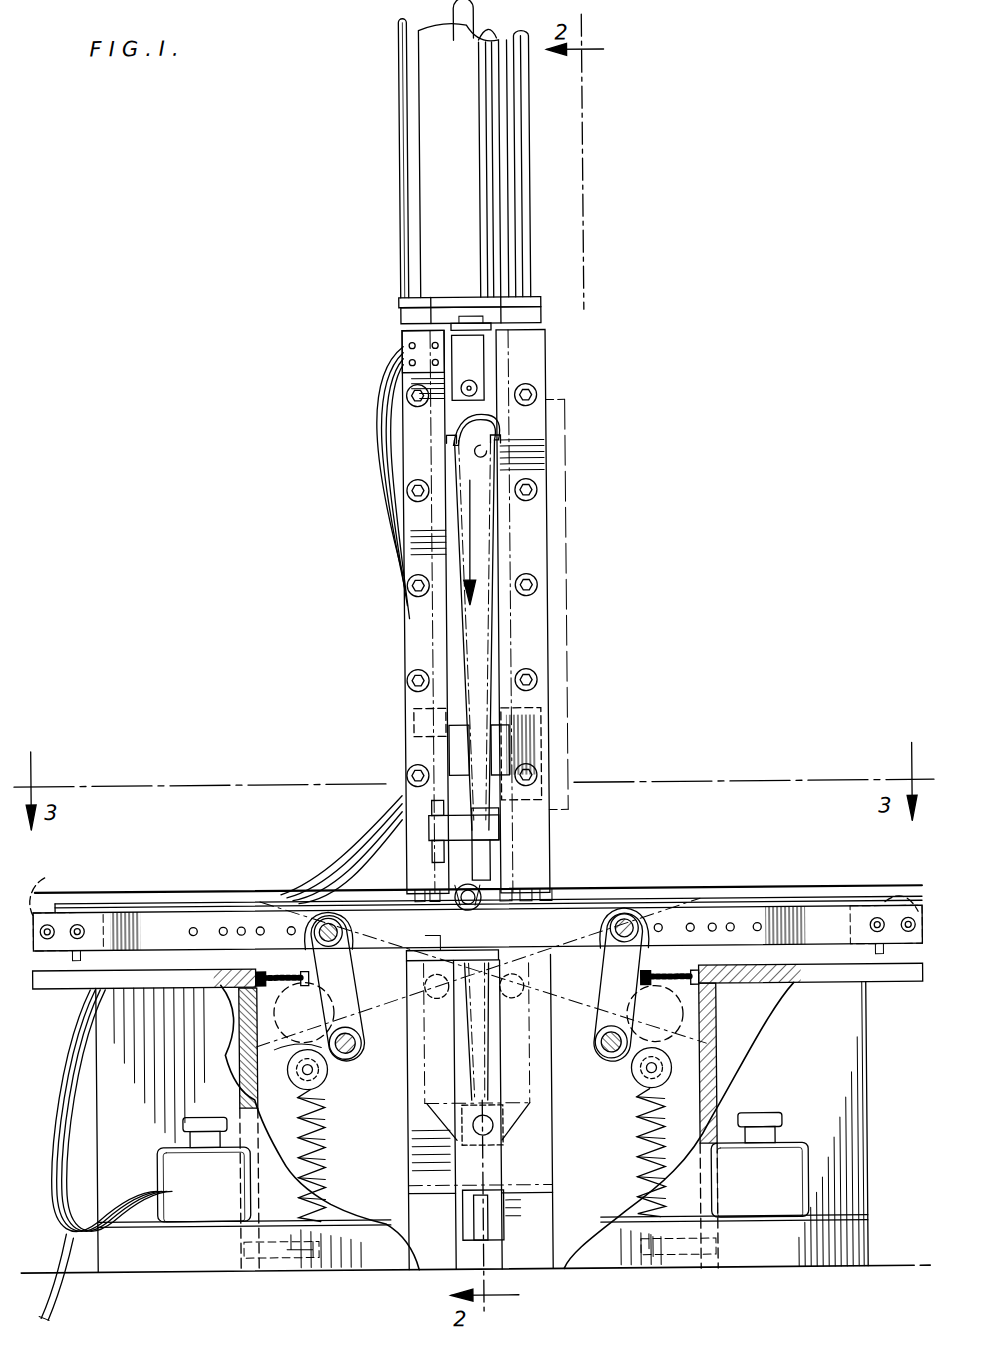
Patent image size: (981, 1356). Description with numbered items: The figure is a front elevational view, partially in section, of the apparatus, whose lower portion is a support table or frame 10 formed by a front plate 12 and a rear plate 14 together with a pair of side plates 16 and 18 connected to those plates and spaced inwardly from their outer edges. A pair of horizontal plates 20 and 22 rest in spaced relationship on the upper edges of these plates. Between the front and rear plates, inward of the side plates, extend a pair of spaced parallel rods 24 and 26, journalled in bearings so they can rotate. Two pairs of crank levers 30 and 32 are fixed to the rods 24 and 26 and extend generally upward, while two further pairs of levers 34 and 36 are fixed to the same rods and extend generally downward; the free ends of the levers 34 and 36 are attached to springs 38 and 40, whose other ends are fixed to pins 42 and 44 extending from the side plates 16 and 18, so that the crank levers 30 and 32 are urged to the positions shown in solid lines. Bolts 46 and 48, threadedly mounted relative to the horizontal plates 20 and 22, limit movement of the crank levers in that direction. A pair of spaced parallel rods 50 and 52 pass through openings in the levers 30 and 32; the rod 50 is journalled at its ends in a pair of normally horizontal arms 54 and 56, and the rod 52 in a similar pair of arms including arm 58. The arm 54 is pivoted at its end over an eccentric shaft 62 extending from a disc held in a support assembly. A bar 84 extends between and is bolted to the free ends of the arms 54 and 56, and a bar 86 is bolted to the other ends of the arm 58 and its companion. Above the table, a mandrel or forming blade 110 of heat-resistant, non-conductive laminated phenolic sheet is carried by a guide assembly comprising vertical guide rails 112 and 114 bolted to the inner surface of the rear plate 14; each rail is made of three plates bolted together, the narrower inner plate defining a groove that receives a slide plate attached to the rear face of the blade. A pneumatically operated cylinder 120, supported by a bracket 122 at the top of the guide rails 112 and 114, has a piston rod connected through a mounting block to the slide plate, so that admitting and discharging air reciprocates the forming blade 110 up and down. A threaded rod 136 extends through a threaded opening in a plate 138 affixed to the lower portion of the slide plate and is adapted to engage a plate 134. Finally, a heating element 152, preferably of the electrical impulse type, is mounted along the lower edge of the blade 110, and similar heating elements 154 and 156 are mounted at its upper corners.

The support table 10 is at (868, 1102).
The front plate 12 is at (138, 1077).
The rear plate 14 is at (587, 1195).
The side plate 16 is at (249, 1104).
The side plate 18 is at (712, 1068).
The horizontal plate 20 is at (61, 977).
The horizontal plate 22 is at (887, 985).
The rod 24 is at (355, 1051).
The rod 26 is at (599, 1053).
The crank lever 30 is at (335, 969).
The crank lever 32 is at (615, 981).
The lever 34 is at (318, 1085).
The lever 36 is at (640, 1073).
The spring 38 is at (322, 1165).
The spring 40 is at (640, 1146).
The pin 42 is at (290, 1260).
The pin 44 is at (680, 1256).
The bolt 46 is at (314, 1012).
The bolt 48 is at (690, 998).
The rod 50 is at (340, 931).
The rod 52 is at (608, 931).
The arm 54 is at (415, 733).
The arm 56 is at (540, 732).
The arm 58 is at (810, 941).
The eccentric shaft 62 is at (482, 893).
The bar 84 is at (40, 893).
The bar 86 is at (905, 909).
The forming blade 110 is at (482, 572).
The guide rail 112 is at (408, 655).
The guide rail 114 is at (551, 645).
The pneumatically operated cylinder 120 is at (462, 200).
The bracket 122 is at (500, 318).
The plate 134 is at (428, 938).
The threaded rod 136 is at (436, 858).
The plate 138 is at (490, 845).
The heating element 152 is at (497, 828).
The heating element 154 is at (455, 437).
The heating element 156 is at (500, 455).